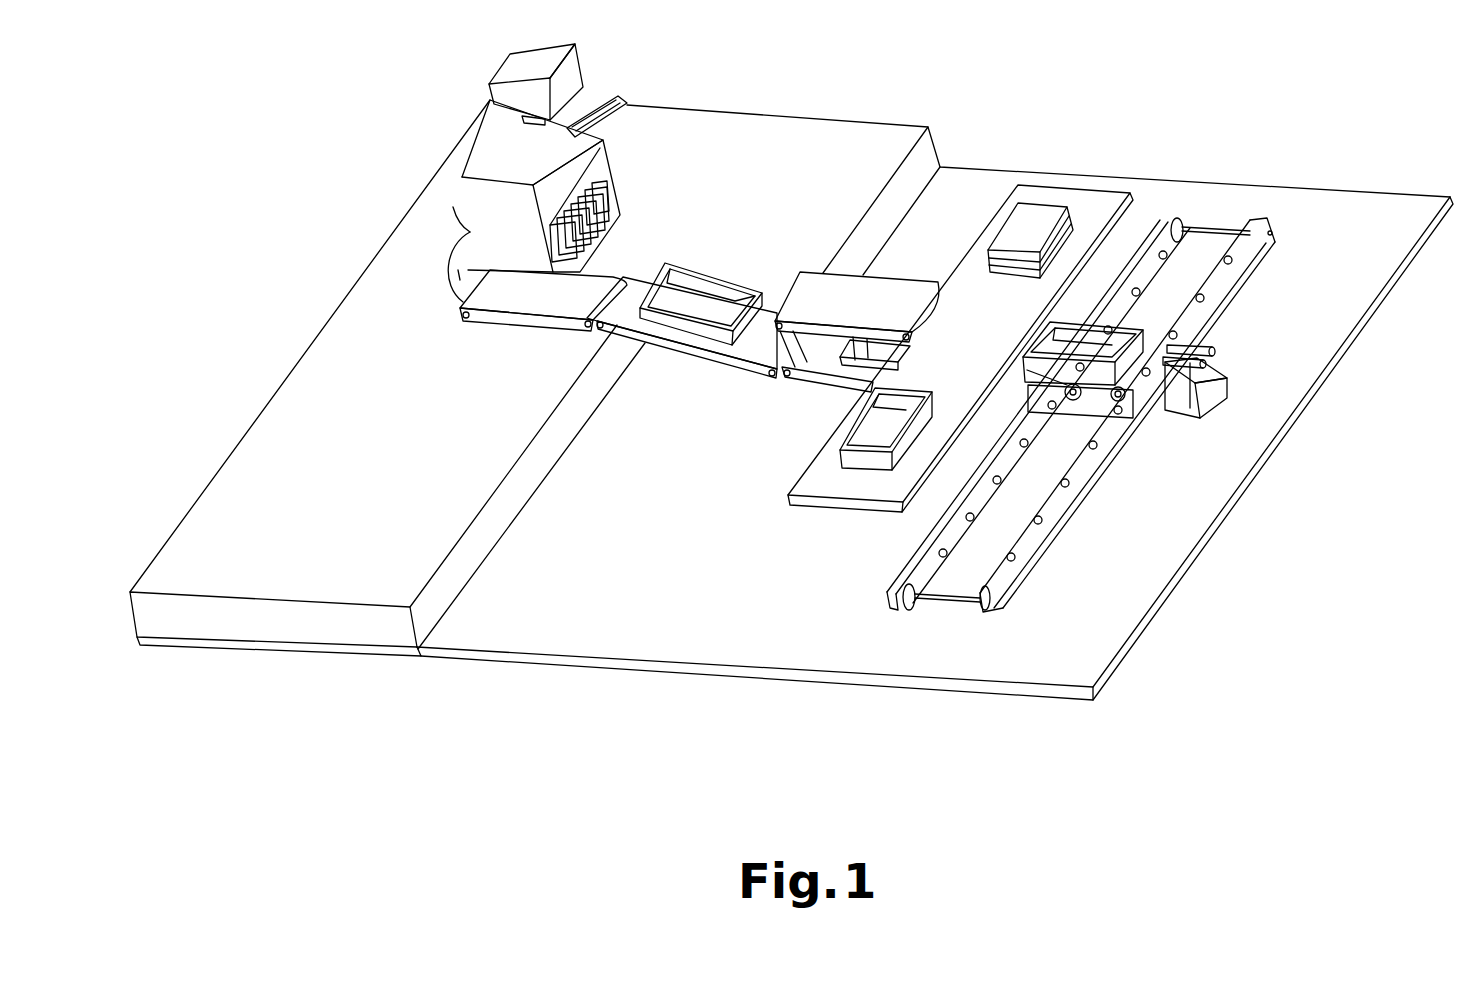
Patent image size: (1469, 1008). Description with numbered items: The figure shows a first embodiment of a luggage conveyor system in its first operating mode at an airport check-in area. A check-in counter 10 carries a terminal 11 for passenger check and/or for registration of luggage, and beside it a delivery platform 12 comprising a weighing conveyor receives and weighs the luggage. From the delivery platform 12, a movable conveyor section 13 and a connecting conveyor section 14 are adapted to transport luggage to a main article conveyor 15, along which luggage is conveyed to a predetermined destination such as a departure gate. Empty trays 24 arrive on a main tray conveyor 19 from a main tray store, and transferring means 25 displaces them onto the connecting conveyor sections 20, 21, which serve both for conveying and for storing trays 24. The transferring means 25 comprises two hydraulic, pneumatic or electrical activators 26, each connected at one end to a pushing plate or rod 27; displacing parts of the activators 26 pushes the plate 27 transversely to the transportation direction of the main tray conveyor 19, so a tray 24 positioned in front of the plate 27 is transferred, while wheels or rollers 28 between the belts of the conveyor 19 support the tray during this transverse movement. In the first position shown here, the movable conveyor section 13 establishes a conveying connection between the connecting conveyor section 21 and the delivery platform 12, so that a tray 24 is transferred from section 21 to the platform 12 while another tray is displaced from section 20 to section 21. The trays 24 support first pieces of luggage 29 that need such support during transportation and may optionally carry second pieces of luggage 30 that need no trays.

The check-in counter 10 is at (474, 133).
The terminal 11 is at (570, 80).
The delivery platform 12 is at (512, 300).
The movable conveyor section 13 is at (638, 278).
The connecting conveyor section 14 is at (883, 300).
The main article conveyor 15 is at (1100, 203).
The main tray conveyor 19 is at (1242, 253).
The connecting conveyor section 20 is at (1013, 386).
The connecting conveyor section 21 is at (807, 380).
The tray 24 is at (712, 280).
The transferring means 25 is at (1185, 392).
The activator 26 is at (1210, 353).
The pushing plate or rod 27 is at (1163, 340).
The wheels or rollers 28 is at (1070, 400).
The first pieces of luggage 29 is at (458, 262).
The second pieces of luggage 30 is at (1032, 225).